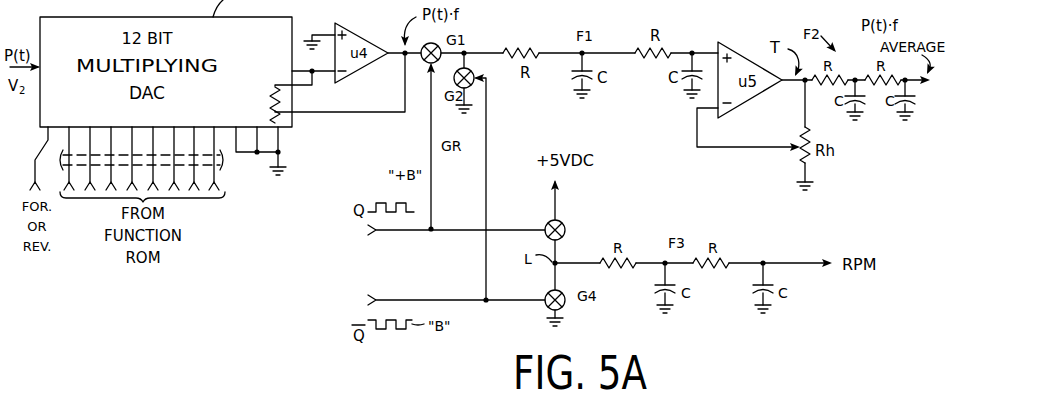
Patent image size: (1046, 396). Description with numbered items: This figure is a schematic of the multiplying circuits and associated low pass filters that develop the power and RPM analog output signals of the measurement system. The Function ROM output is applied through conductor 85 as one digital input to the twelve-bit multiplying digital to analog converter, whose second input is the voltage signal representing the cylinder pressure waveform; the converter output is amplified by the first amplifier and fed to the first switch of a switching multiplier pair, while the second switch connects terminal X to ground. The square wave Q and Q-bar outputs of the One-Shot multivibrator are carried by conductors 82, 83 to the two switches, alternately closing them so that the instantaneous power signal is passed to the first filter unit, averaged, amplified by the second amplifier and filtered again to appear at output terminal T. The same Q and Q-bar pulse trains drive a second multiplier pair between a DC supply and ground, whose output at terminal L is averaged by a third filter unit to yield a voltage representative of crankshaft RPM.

The conductor 82 is at (431, 136).
The conductor 83 is at (486, 141).
The conductor 85 is at (224, 164).